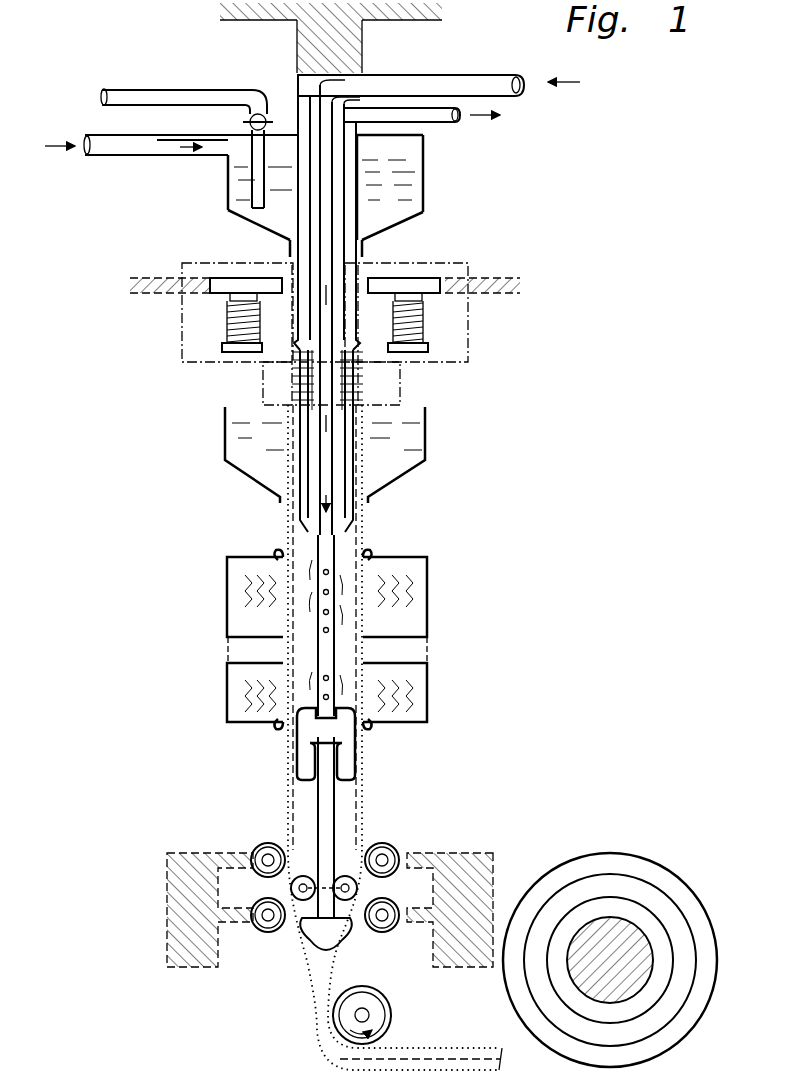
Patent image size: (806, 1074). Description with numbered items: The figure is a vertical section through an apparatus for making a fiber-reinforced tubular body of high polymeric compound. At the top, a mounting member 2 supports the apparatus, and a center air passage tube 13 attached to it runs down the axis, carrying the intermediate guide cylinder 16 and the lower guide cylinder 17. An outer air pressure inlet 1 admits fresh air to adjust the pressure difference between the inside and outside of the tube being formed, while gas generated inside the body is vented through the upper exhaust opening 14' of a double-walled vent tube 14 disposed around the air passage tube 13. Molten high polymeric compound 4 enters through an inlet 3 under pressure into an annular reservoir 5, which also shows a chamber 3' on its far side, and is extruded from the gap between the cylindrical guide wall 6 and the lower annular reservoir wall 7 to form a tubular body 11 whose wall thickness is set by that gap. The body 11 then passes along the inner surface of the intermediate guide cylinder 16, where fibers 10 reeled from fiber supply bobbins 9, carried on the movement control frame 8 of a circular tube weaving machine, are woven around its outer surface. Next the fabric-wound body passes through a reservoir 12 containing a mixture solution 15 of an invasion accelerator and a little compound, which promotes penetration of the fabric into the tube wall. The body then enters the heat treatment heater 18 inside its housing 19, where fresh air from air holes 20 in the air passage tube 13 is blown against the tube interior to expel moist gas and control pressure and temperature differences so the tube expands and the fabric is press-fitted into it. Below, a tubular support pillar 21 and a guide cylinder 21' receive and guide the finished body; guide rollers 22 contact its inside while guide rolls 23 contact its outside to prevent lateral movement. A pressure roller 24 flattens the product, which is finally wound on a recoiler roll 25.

The outer air pressure inlet 1 is at (512, 80).
The mounting member 2 is at (340, 41).
The inlet 3 is at (171, 163).
The right chamber 3' is at (406, 187).
The molten high polymeric compound 4 is at (415, 183).
The annular reservoir 5 is at (228, 195).
The cylindrical guide wall 6 is at (300, 212).
The lower annular reservoir wall 7 is at (290, 250).
The movement control frame 8 is at (425, 285).
The fiber supply bobbins 9 is at (420, 322).
The fibers 10 is at (385, 350).
The tubular body 11 is at (252, 355).
The reservoir 12 is at (428, 437).
The center air passage tube 13 is at (323, 213).
The double-walled vent tube 14 is at (327, 441).
The upper exhaust opening 14' is at (431, 123).
The mixture solution 15 is at (235, 450).
The intermediate guide cylinder 16 is at (300, 355).
The lower guide cylinder 17 is at (345, 742).
The heat treatment heater 18 is at (248, 612).
The housing 19 is at (228, 592).
The air holes 20 is at (336, 612).
The tubular support pillar 21 is at (293, 827).
The guide cylinder 21' is at (354, 946).
The guide rollers 22 is at (345, 876).
The guide rolls 23 is at (262, 852).
The pressure roller 24 is at (387, 1015).
The recoiler roll 25 is at (680, 893).